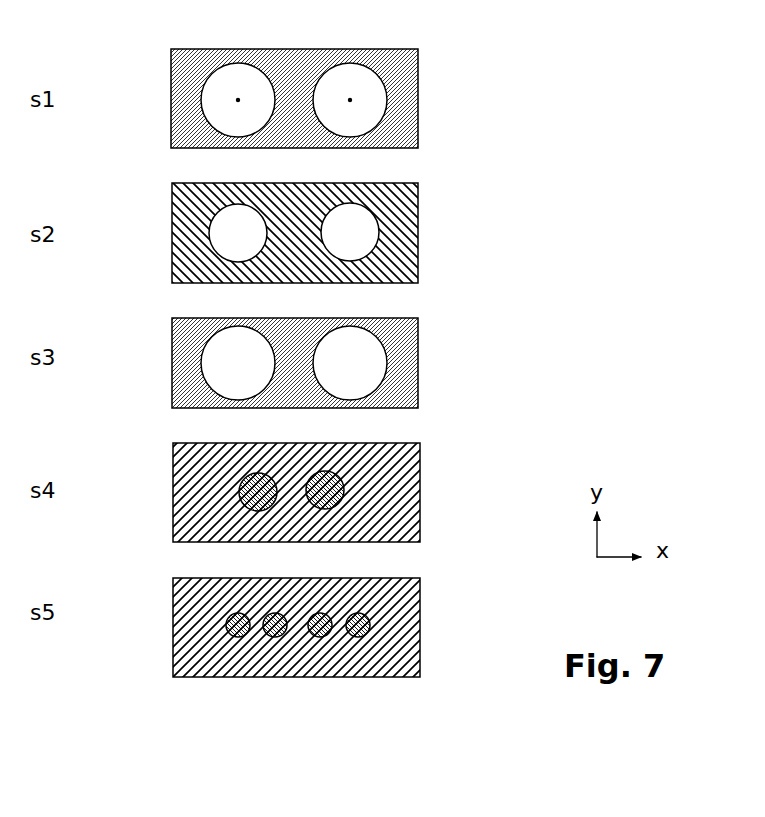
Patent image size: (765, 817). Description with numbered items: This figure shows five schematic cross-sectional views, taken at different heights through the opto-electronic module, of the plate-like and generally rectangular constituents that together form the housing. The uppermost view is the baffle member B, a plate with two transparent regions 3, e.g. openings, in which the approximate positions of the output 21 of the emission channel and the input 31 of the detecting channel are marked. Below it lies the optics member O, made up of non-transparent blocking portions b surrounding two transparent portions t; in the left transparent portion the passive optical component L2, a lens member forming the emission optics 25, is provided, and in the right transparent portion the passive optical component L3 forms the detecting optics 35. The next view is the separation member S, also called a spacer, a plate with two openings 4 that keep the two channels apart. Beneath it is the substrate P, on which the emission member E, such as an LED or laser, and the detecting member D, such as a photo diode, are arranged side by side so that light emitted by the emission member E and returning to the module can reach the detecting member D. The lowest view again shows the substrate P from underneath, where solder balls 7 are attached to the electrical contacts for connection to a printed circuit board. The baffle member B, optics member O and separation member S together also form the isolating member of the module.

The baffle member B is at (437, 75).
The output of emission channel 21 is at (237, 99).
The input of detecting channel 31 is at (351, 99).
The transparent region 3 is at (367, 105).
The optics member O is at (437, 202).
The blocking portion b is at (400, 258).
The emission optics 25 is at (167, 243).
The passive optical component L2 is at (167, 243).
The transparent portion t is at (222, 245).
The detecting optics 35 is at (448, 232).
The passive optical component L3 is at (367, 242).
The separation member S is at (437, 352).
The opening 4 is at (366, 372).
The substrate P is at (437, 470).
The emission member E is at (242, 490).
The detecting member D is at (344, 495).
The solder ball 7 is at (370, 625).